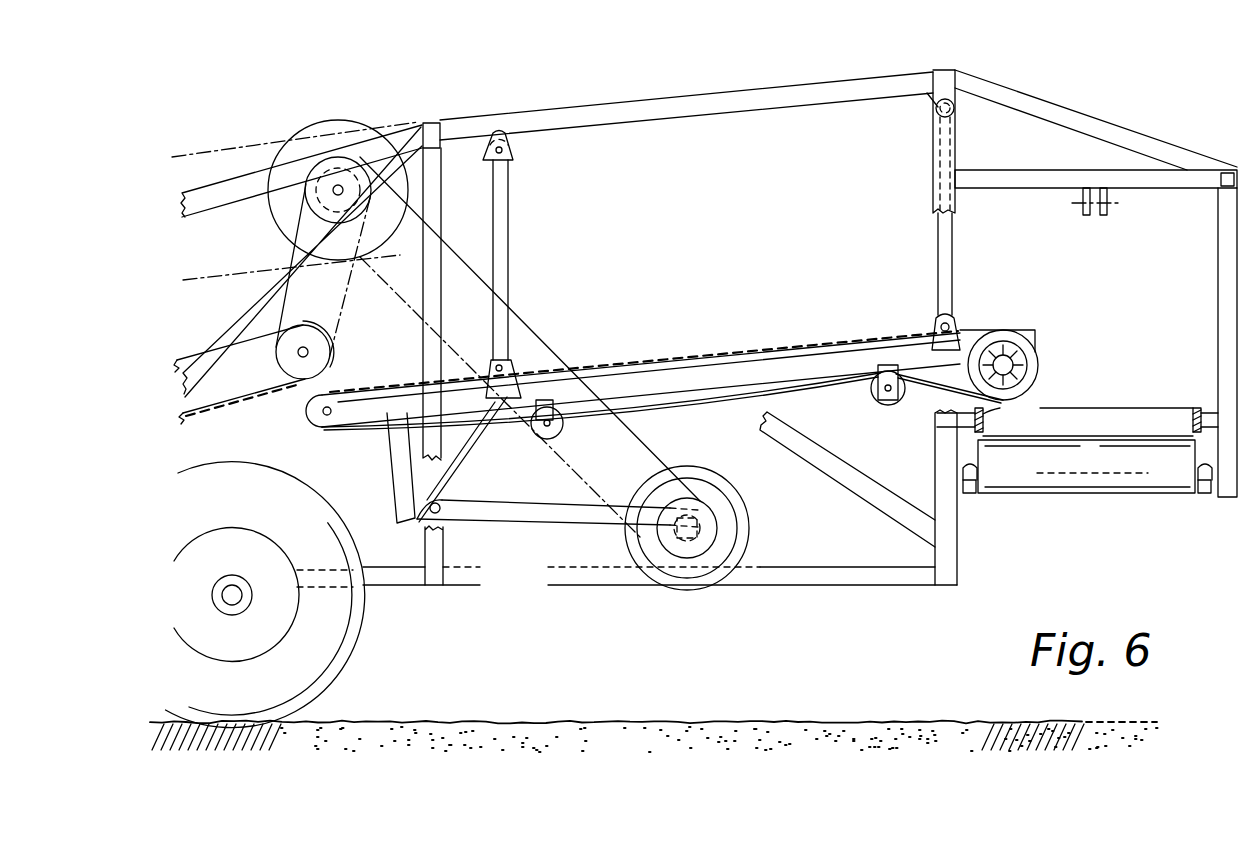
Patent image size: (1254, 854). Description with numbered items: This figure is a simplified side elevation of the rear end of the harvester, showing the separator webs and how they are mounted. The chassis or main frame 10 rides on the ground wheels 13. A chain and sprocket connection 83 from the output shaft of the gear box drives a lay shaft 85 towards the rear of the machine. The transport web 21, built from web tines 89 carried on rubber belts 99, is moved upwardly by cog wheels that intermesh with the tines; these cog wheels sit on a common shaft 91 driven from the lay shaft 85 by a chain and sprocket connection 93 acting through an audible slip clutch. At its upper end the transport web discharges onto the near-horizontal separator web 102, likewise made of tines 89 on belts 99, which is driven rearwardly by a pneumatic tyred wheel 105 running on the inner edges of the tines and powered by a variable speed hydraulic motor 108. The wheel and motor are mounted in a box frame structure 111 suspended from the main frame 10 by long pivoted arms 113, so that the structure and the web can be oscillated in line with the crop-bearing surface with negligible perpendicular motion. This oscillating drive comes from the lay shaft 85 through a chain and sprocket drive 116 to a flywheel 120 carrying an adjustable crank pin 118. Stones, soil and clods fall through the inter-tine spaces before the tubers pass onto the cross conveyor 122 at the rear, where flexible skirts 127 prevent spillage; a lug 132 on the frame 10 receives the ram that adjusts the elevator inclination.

The chassis or main frame 10 is at (538, 117).
The ground wheels 13 is at (330, 667).
The transport web 21 is at (193, 350).
The chain and sprocket connection 83 is at (190, 150).
The lay shaft 85 is at (341, 187).
The web tines 89 is at (858, 316).
The common shaft 91 is at (305, 352).
The chain and sprocket connection 93 is at (293, 220).
The rubber belts 99 is at (707, 403).
The separator web 102 is at (658, 352).
The pneumatic tyred wheel 105 is at (1025, 385).
The variable speed hydraulic motor 108 is at (1017, 363).
The box frame structure 111 is at (712, 375).
The pivoted arms 113 is at (502, 203).
The chain and sprocket drive 116 is at (525, 322).
The crank pin 118 is at (547, 515).
The flywheel 120 is at (747, 515).
The cross conveyor 122 is at (1120, 480).
The flexible skirts 127 is at (1178, 437).
The lug 132 is at (1098, 228).